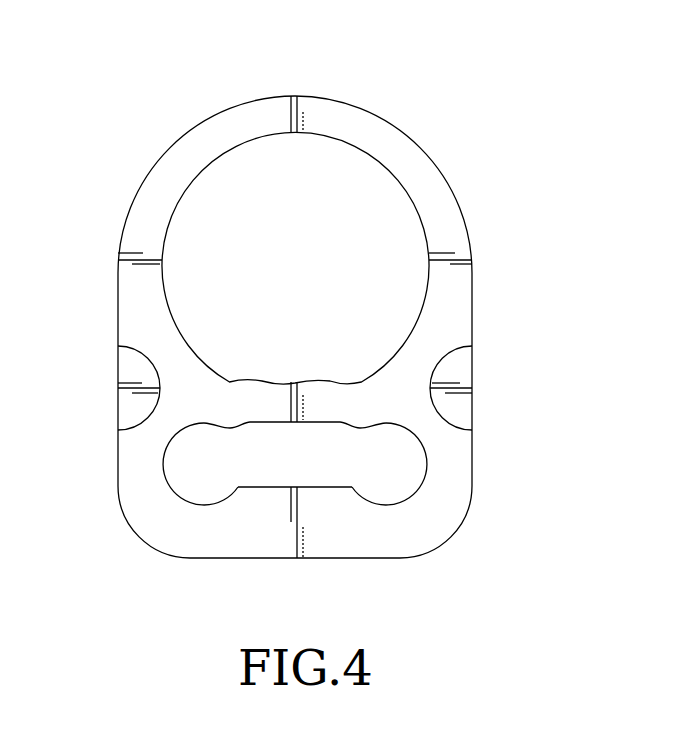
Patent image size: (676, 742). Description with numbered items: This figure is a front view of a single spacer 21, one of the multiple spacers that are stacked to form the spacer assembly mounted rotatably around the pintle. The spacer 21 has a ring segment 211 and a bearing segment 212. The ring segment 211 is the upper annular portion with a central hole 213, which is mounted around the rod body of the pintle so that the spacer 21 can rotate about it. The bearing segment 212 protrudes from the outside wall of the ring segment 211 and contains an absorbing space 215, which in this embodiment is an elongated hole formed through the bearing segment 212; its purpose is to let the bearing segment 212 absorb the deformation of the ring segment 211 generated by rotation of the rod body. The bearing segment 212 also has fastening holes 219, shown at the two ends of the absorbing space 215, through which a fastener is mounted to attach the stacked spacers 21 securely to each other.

The spacer 21 is at (95, 91).
The ring segment 211 is at (312, 112).
The bearing segment 212 is at (130, 471).
The central hole 213 is at (388, 215).
The absorbing space 215 is at (305, 467).
The fastening hole 219 is at (183, 473).